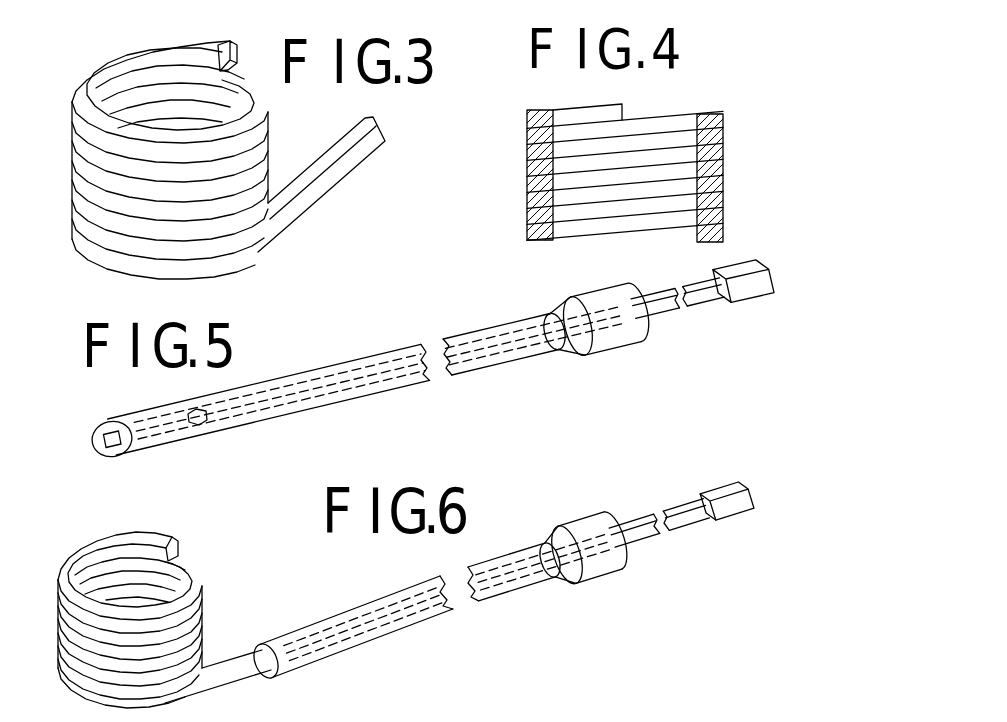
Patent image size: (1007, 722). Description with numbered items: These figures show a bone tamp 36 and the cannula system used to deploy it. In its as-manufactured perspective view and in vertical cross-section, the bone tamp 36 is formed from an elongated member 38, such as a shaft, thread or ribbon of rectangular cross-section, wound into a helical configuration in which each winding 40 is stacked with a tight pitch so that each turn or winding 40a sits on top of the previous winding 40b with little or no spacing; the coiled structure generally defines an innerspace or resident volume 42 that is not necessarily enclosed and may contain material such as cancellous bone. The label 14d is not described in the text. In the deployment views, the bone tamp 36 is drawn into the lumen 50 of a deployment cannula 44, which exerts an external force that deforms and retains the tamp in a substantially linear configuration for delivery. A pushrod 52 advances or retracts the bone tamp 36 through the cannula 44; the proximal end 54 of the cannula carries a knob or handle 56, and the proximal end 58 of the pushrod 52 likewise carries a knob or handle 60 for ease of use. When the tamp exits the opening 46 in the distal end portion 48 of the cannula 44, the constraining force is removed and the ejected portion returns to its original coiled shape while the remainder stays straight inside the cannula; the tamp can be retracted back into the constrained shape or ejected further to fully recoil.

In FIG. 3, the housing portion 14d is at (56, 11).
In FIG. 3, the bone tamp 36 is at (54, 70).
In FIG. 4, the bone tamp 36 is at (496, 138).
In FIG. 5, the bone tamp 36 is at (250, 398).
In FIG. 6, the bone tamp 36 is at (200, 602).
In FIG. 3, the elongated member 38 is at (315, 168).
In FIG. 3, the winding 40 is at (172, 232).
In FIG. 4, the winding 40 is at (571, 214).
In FIG. 3, the turn or winding 40a is at (80, 172).
In FIG. 4, the turn or winding 40a is at (560, 167).
In FIG. 3, the previous winding 40b is at (80, 190).
In FIG. 4, the previous winding 40b is at (560, 182).
In FIG. 3, the resident volume 42 is at (163, 110).
In FIG. 5, the deployment cannula 44 is at (320, 367).
In FIG. 6, the deployment cannula 44 is at (327, 617).
In FIG. 5, the opening 46 is at (105, 440).
In FIG. 5, the distal end portion 48 is at (162, 448).
In FIG. 5, the lumen 50 is at (160, 424).
In FIG. 5, the pushrod 52 is at (708, 304).
In FIG. 6, the pushrod 52 is at (684, 520).
In FIG. 5, the proximal end 54 is at (573, 347).
In FIG. 6, the proximal end 54 is at (540, 580).
In FIG. 5, the knob or handle 56 is at (597, 287).
In FIG. 6, the knob or handle 56 is at (577, 508).
In FIG. 5, the proximal end 58 is at (710, 275).
In FIG. 6, the proximal end 58 is at (688, 497).
In FIG. 5, the knob or handle 60 is at (748, 295).
In FIG. 6, the knob or handle 60 is at (737, 508).